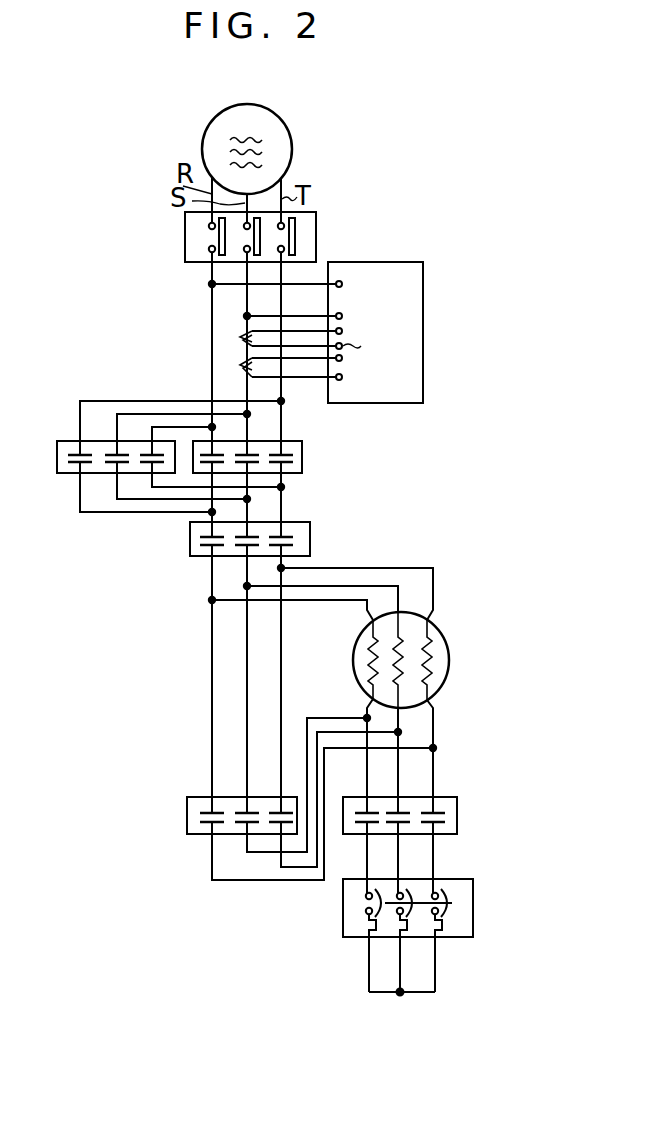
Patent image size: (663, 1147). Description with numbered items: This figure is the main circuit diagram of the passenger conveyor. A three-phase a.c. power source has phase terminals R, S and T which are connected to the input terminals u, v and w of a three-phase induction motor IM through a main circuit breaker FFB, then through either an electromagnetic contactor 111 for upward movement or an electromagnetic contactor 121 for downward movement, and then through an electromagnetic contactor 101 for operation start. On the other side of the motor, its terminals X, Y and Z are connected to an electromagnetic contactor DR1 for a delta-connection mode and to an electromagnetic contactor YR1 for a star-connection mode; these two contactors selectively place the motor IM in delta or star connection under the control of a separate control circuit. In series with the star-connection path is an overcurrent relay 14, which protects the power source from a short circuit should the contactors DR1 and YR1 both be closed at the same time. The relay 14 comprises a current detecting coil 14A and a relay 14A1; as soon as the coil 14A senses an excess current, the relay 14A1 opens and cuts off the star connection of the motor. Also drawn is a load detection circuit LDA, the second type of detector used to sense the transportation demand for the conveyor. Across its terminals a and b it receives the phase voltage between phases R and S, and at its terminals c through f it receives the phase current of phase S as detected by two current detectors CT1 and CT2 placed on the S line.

The main circuit breaker FFB is at (185, 238).
The load detection circuit LDA is at (445, 285).
The current detector CT1 is at (240, 339).
The current detector CT2 is at (243, 366).
The electromagnetic contactor for upward movement 111 is at (57, 454).
The electromagnetic contactor for downward movement 121 is at (302, 460).
The electromagnetic contactor for operation start 101 is at (310, 543).
The three-phase induction motor IM is at (449, 656).
The electromagnetic contactor for delta-connection mode DR1 is at (187, 813).
The electromagnetic contactor for star-connection mode YR1 is at (457, 818).
The overcurrent relay 14 is at (440, 919).
The relay 14A1 is at (443, 898).
The current detecting coil 14A is at (443, 926).